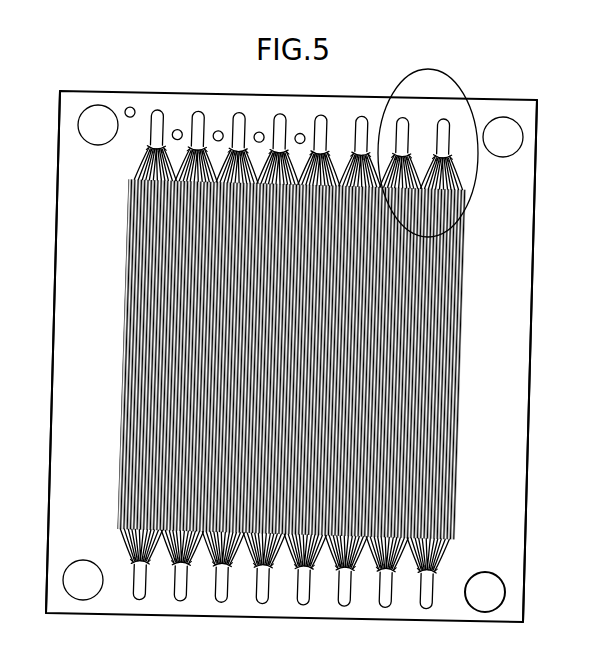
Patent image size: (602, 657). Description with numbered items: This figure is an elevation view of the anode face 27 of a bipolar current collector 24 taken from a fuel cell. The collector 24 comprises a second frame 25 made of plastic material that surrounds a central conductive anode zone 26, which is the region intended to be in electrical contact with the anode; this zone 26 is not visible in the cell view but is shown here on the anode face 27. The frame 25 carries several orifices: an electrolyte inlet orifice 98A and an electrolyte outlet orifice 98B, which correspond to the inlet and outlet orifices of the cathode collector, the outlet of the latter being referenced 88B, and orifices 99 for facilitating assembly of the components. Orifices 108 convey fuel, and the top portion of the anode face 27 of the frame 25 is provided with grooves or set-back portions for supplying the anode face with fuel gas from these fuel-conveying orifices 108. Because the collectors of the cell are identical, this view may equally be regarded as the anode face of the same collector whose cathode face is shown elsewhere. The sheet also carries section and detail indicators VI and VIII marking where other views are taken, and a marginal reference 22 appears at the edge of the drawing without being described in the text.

The second bipolar current collector 24 is at (106, 90).
The second frame 25 is at (500, 210).
The central conductive anode zone 26 is at (291, 359).
The anode face 27 is at (100, 211).
The orifices for facilitating component assembly 99 is at (95, 127).
The electrolyte inlet orifice 98A is at (508, 136).
The electrolyte outlet orifice 98B is at (76, 578).
The substrate 22 is at (9, 503).
The electrolyte outlet orifice 88B is at (12, 553).
The orifices for conveying fuel 108 is at (287, 358).
The section view indicator VI is at (30, 418).
The detail view indicator VIII is at (453, 90).